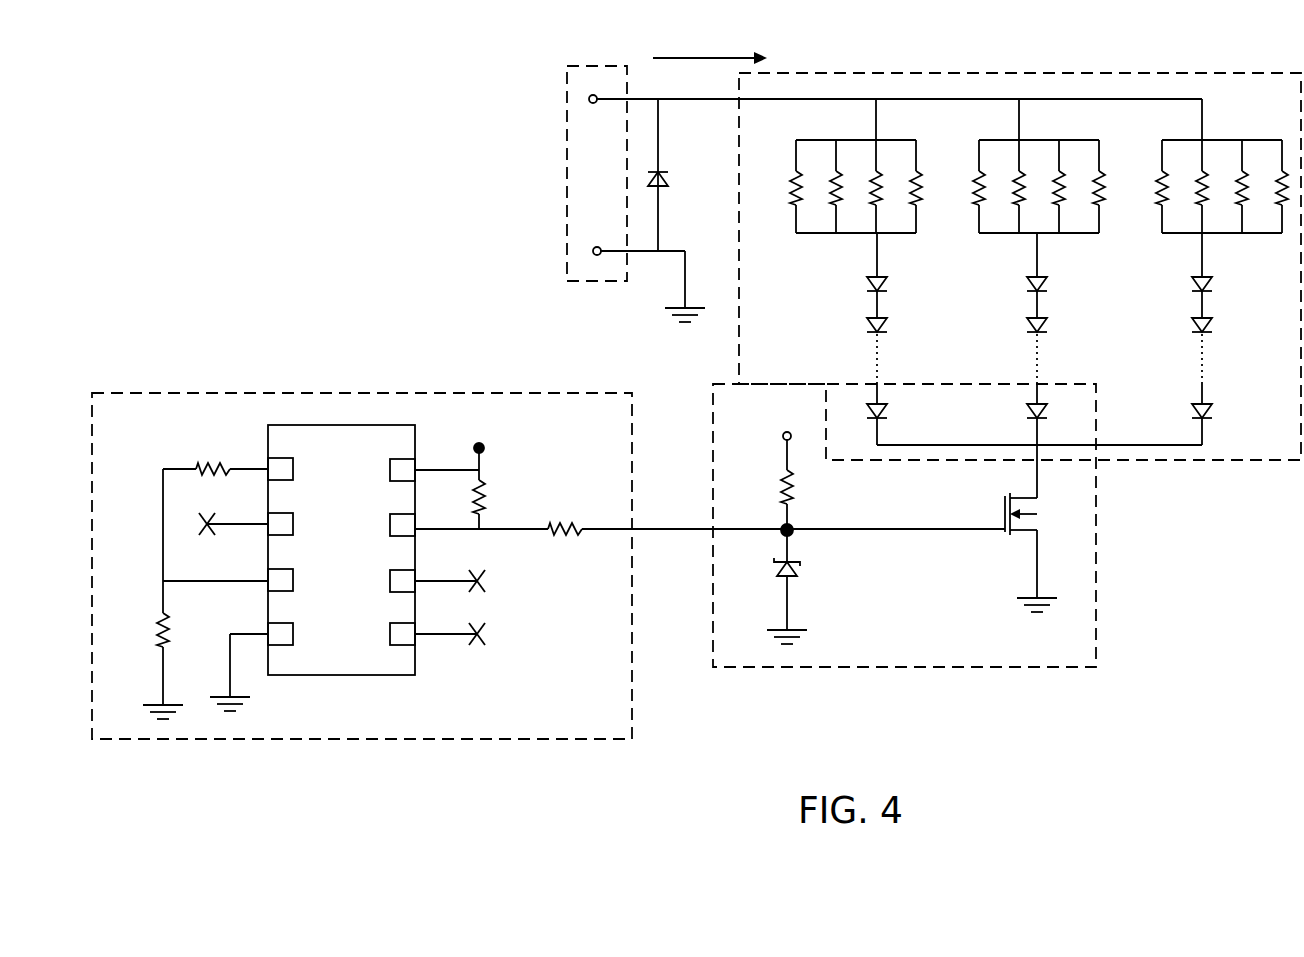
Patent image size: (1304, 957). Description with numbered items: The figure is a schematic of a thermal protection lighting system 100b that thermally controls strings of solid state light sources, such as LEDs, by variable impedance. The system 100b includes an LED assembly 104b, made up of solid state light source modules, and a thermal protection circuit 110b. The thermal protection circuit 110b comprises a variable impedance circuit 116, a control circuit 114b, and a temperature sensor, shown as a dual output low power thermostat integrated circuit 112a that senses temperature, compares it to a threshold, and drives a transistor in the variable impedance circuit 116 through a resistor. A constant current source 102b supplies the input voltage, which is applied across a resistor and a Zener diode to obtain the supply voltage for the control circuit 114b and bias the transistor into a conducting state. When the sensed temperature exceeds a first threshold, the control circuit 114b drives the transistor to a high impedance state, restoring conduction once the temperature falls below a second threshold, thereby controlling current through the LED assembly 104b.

The thermal protection lighting system 100b is at (386, 68).
The constant current source 102b is at (567, 242).
The LED assembly 104b is at (1153, 461).
The thermal protection circuit 110b is at (472, 348).
The thermostat integrated circuit (LM56) 112a is at (338, 675).
The control circuit 114b is at (632, 690).
The variable impedance circuit 116 is at (1096, 575).